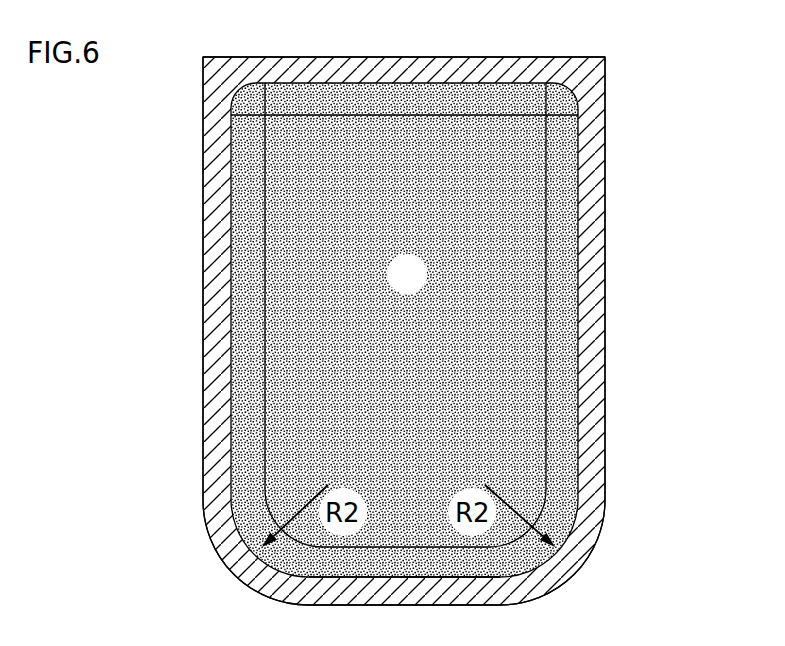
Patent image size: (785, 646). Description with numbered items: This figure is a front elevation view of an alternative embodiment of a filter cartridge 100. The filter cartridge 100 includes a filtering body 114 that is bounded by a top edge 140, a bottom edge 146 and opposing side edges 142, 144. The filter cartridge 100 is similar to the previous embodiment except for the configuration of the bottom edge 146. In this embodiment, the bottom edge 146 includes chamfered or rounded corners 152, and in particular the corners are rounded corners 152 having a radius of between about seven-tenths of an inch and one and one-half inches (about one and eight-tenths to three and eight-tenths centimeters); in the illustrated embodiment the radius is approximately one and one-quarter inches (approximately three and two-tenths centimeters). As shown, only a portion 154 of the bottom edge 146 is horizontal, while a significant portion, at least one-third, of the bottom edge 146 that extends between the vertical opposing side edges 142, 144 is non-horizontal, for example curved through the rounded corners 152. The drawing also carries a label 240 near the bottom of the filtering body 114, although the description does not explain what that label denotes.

The filter cartridge 100 is at (690, 125).
The filtering body 114 is at (428, 286).
The top edge 140 is at (362, 83).
The side edge 142 is at (230, 258).
The side edge 144 is at (578, 316).
The bottom edge 146 is at (295, 572).
The rounded corners 152 is at (223, 520).
The portion of the bottom edge 154 is at (367, 577).
The bottom portion 240 is at (468, 611).